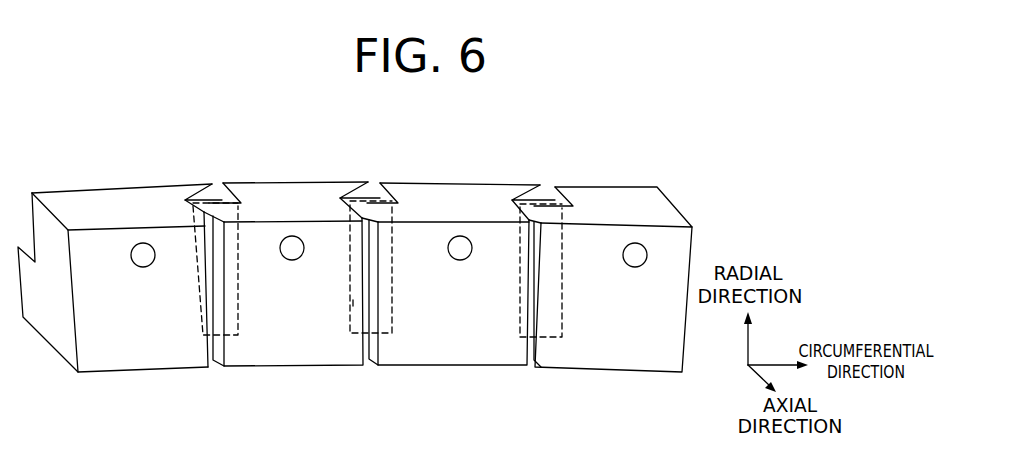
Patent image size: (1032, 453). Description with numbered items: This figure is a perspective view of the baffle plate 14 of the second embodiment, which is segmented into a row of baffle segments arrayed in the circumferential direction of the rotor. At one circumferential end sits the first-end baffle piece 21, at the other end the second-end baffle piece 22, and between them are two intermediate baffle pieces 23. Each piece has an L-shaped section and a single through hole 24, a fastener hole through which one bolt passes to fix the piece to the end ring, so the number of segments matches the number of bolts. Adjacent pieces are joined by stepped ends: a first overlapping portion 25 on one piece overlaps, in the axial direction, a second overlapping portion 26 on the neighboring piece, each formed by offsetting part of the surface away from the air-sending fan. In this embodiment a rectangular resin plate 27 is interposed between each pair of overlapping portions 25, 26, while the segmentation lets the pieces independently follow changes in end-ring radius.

The baffle plate 14 is at (627, 177).
The first-end baffle piece 21 is at (122, 200).
The second-end baffle piece 22 is at (620, 208).
The intermediate baffle piece 23 is at (315, 203).
The through hole 24 is at (293, 247).
The first overlapping portion 25 is at (202, 196).
The second overlapping portion 26 is at (222, 212).
The resin plate 27 is at (353, 306).